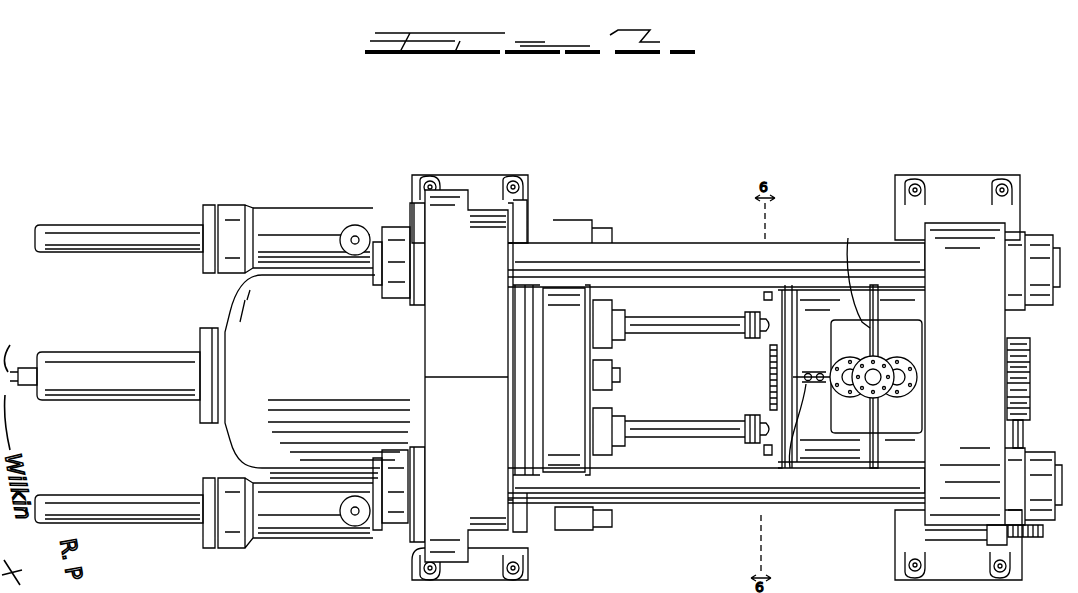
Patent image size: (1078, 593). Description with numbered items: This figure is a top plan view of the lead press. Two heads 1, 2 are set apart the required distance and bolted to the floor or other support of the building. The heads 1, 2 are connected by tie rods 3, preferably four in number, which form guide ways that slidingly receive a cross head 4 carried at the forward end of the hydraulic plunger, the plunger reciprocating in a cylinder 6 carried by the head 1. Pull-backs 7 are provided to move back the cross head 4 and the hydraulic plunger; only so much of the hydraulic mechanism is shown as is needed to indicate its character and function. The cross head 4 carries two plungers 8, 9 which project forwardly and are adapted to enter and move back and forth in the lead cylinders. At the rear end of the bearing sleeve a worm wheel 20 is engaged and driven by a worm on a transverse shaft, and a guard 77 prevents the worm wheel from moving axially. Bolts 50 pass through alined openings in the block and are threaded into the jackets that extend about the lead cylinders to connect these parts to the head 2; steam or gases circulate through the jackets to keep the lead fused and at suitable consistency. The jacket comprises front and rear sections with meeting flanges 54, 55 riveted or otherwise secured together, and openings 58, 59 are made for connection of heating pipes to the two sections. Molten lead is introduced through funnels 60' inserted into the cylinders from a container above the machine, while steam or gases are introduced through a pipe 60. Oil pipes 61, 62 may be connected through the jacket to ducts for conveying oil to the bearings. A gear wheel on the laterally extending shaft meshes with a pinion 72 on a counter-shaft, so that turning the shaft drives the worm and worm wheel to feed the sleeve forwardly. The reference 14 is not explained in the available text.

The head 1 is at (454, 200).
The head 2 is at (955, 235).
The tie rods 3 is at (642, 255).
The cross head 4 is at (572, 424).
The cylinder 6 is at (317, 376).
The pull-backs 7 is at (60, 232).
The plunger 8 is at (690, 326).
The plunger 9 is at (725, 440).
The cylinder 14 is at (70, 362).
The worm wheel 20 is at (762, 373).
The bolts 50 is at (1030, 378).
The meeting flange 54 is at (880, 324).
The meeting flange 55 is at (846, 270).
The opening 58 is at (912, 382).
The opening 59 is at (838, 370).
The pipe 60 is at (913, 366).
The funnels 60' is at (726, 423).
The oil pipe 61 is at (797, 441).
The oil pipe 62 is at (825, 386).
The pinion 72 is at (1038, 538).
The guard 77 is at (1030, 346).